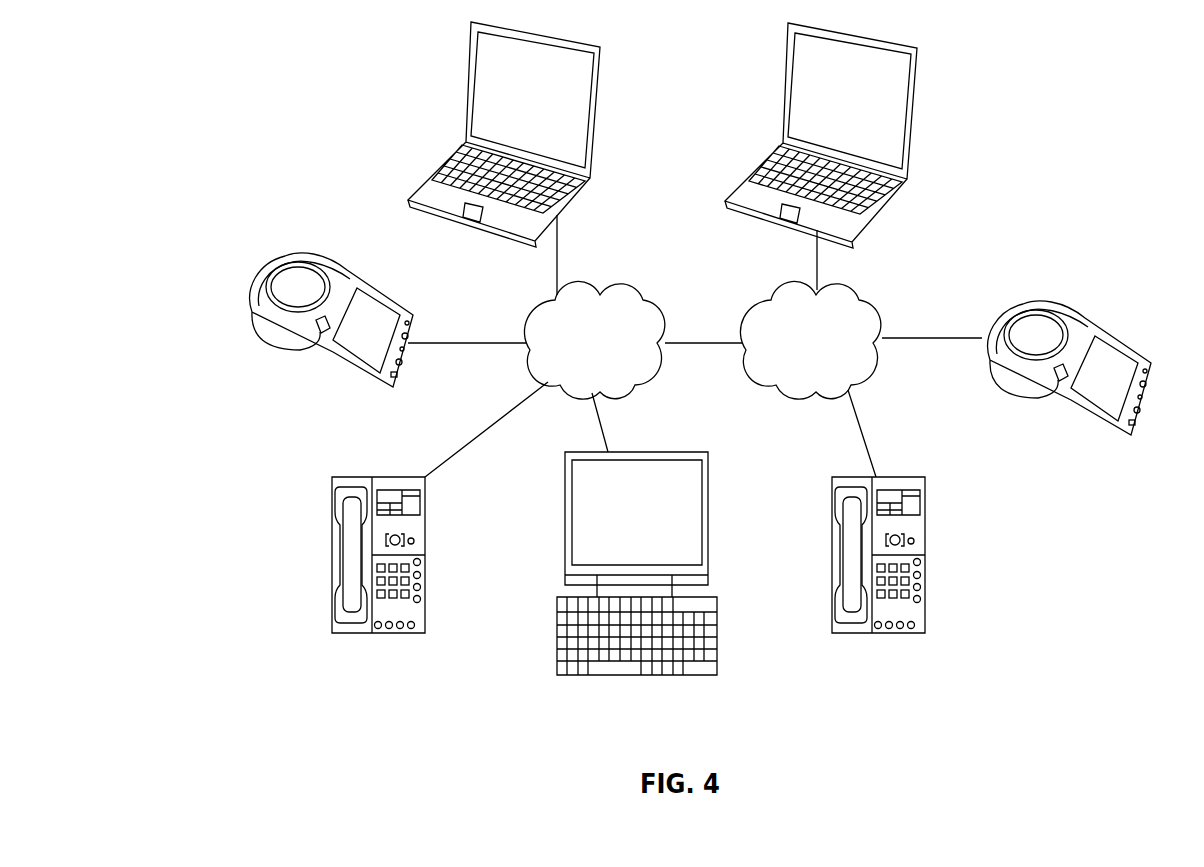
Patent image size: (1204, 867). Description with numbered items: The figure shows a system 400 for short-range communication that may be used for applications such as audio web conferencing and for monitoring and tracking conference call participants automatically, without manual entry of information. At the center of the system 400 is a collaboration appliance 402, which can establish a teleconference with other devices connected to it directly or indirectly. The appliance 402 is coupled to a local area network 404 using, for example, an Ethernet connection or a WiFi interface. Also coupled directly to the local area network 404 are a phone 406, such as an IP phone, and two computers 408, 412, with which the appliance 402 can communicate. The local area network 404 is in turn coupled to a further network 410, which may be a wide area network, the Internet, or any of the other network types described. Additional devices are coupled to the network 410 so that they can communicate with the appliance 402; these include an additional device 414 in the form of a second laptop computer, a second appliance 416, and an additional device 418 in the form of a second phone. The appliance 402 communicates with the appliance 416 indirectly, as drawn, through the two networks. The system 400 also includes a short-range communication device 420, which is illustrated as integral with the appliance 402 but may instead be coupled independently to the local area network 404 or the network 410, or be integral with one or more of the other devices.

The system 400 is at (1087, 60).
The collaboration appliance 402 is at (257, 272).
The local area network 404 is at (622, 281).
The phone 406 is at (332, 523).
The computer 408 is at (468, 77).
The network 410 is at (857, 290).
The computer 412 is at (708, 465).
The additional device 414 is at (917, 92).
The appliance 416 is at (1087, 318).
The additional device 418 is at (927, 527).
The short-range communication device 420 is at (318, 330).